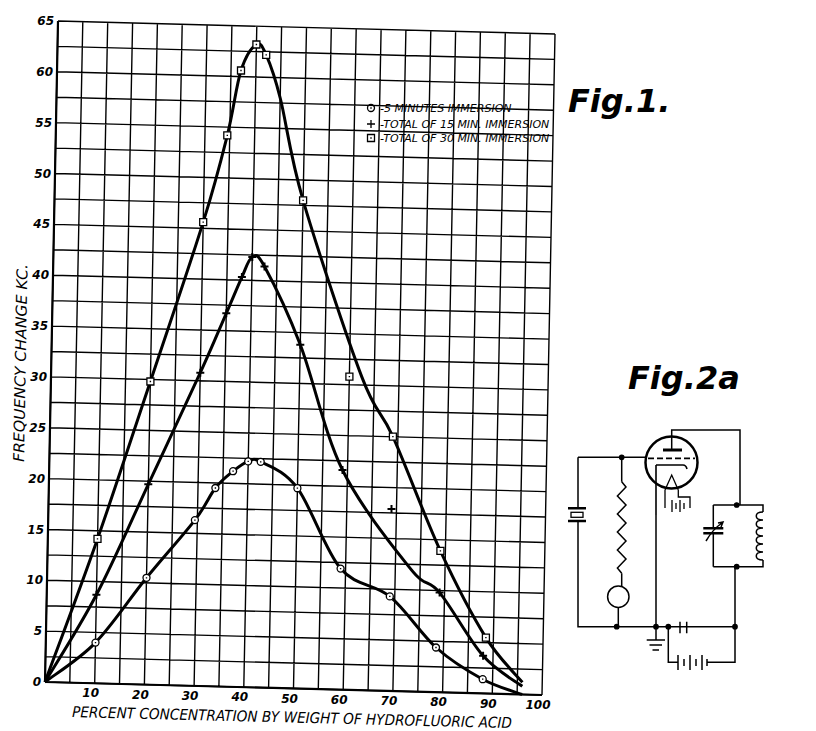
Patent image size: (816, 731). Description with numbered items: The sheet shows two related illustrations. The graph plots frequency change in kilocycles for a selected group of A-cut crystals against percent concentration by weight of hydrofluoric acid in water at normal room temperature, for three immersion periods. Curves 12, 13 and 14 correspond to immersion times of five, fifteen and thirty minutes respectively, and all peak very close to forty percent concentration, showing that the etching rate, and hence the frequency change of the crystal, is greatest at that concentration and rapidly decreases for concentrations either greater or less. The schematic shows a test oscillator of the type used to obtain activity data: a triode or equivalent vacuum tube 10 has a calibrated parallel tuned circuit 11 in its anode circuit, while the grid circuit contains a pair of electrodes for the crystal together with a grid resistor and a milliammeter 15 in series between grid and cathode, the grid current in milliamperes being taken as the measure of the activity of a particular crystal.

In FIG. 1, the curve 12 is at (317, 531).
In FIG. 2A, the curve 12 is at (578, 508).
In FIG. 1, the curve 13 is at (322, 403).
In FIG. 2A, the curve 13 is at (583, 515).
In FIG. 1, the curve 14 is at (341, 297).
In FIG. 2A, the curve 14 is at (622, 529).
In FIG. 2A, the vacuum tube 10 is at (698, 459).
In FIG. 2A, the milliammeter 15 is at (626, 588).
In FIG. 2A, the calibrated parallel tuned circuit 11 is at (754, 504).